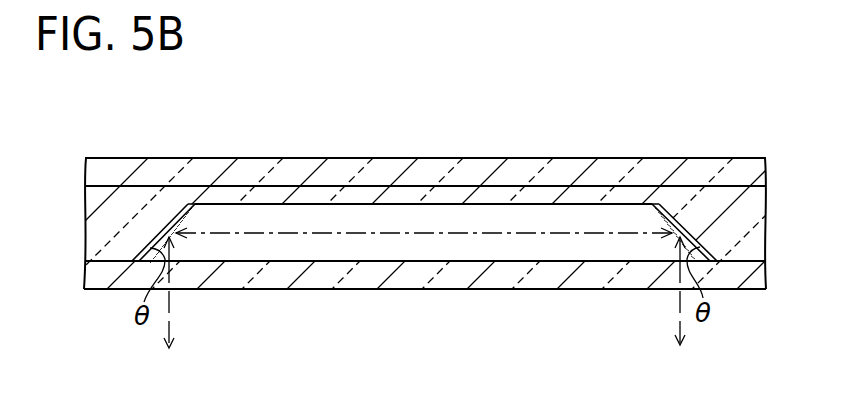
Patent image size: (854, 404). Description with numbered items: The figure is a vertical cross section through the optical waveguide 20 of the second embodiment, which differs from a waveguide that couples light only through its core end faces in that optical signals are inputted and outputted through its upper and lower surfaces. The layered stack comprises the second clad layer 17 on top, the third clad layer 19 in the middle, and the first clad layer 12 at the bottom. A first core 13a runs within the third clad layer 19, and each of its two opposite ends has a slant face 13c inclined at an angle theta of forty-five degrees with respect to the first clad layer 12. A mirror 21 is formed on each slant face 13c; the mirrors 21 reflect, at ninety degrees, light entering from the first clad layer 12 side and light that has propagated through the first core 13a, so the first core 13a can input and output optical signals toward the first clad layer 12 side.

The optical waveguide 20 is at (110, 128).
The second clad layer 17 is at (746, 172).
The third clad layer 19 is at (748, 219).
The first clad layer 12 is at (748, 276).
The mirror 21 is at (213, 210).
The slant face 13c is at (196, 212).
The first core 13a is at (385, 245).